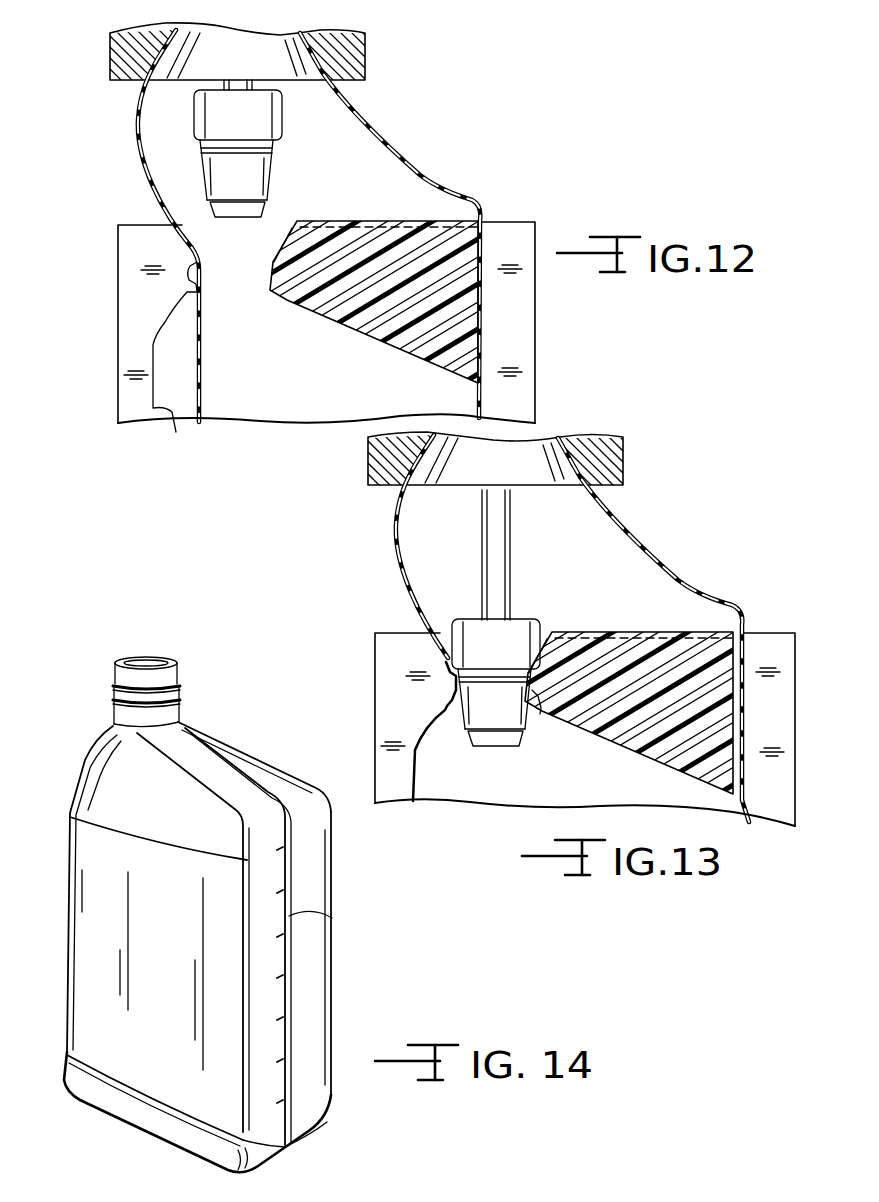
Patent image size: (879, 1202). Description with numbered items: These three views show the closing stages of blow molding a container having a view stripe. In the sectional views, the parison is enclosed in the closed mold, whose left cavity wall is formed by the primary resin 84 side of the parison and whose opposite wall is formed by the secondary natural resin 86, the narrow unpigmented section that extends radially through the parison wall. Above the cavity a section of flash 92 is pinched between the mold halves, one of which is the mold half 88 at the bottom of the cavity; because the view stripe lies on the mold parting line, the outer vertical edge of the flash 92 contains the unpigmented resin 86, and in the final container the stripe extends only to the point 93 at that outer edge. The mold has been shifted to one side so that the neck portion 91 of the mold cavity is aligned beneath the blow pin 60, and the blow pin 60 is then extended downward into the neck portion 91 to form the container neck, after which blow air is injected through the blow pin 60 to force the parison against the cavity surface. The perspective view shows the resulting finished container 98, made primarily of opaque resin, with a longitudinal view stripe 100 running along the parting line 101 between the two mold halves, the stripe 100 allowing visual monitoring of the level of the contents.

In FIG. 12, the blow pin 60 is at (283, 121).
In FIG. 13, the blow pin 60 is at (535, 622).
In FIG. 12, the primary resin 84 is at (148, 165).
In FIG. 13, the primary resin 84 is at (397, 545).
In FIG. 12, the secondary natural resin 86 is at (400, 158).
In FIG. 13, the secondary natural resin 86 is at (642, 555).
In FIG. 12, the mold half 88 is at (176, 426).
In FIG. 12, the neck portion of the mold cavity 91 is at (204, 241).
In FIG. 13, the neck portion of the mold cavity 91 is at (448, 640).
In FIG. 12, the flash 92 is at (366, 318).
In FIG. 13, the flash 92 is at (622, 740).
In FIG. 12, the point at the outer vertical edge of the flash 93 is at (495, 412).
In FIG. 13, the point at the outer vertical edge of the flash 93 is at (748, 796).
In FIG. 14, the point at the outer vertical edge of the flash 93 is at (270, 792).
In FIG. 14, the finished container 98 is at (113, 777).
In FIG. 14, the view stripe 100 is at (332, 922).
In FIG. 14, the parting line 101 is at (228, 768).